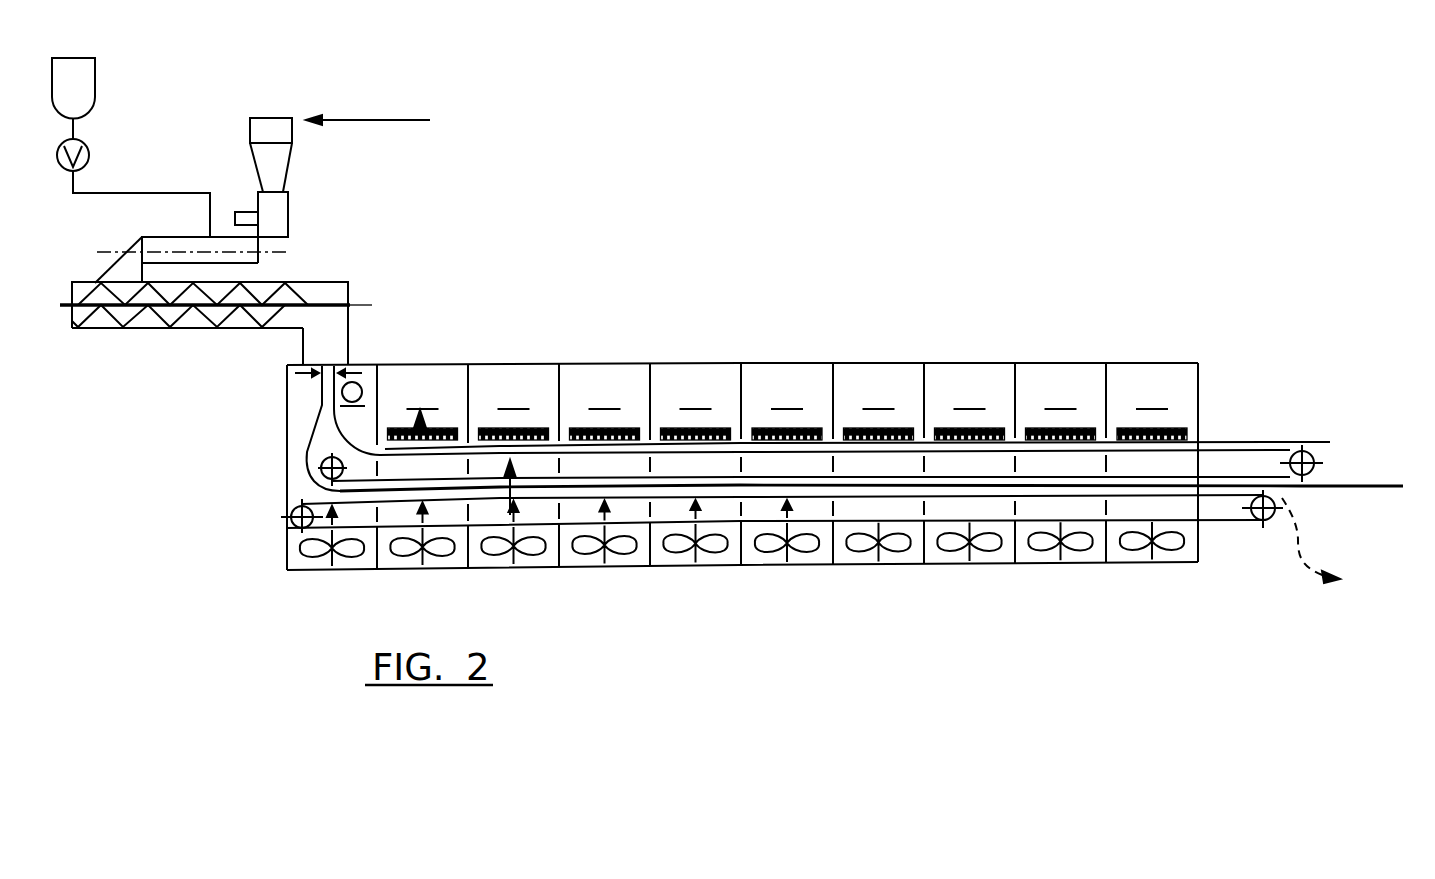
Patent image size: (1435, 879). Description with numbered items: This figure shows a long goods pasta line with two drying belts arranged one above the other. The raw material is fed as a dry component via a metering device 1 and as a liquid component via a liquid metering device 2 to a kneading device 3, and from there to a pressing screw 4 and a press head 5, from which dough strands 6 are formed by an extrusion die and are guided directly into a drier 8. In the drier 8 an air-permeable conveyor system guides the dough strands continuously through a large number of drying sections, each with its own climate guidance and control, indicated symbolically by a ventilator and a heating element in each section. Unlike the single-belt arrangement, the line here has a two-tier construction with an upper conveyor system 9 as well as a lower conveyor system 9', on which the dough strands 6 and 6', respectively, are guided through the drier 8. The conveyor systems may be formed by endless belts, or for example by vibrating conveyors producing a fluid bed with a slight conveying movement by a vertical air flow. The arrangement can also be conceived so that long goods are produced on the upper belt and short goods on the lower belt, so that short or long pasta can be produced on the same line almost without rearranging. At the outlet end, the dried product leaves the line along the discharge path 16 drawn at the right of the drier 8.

The metering device 1 is at (288, 204).
The liquid metering device 2 is at (90, 150).
The kneading device 3 is at (158, 236).
The pressing screw 4 is at (160, 329).
The press head 5 is at (302, 350).
The dough strands 6 is at (789, 424).
The dough strands 6' is at (825, 428).
The drier 8 is at (793, 348).
The upper conveyor system 9 is at (765, 515).
The lower conveyor system 9' is at (285, 543).
The product discharge path 16 is at (1300, 522).